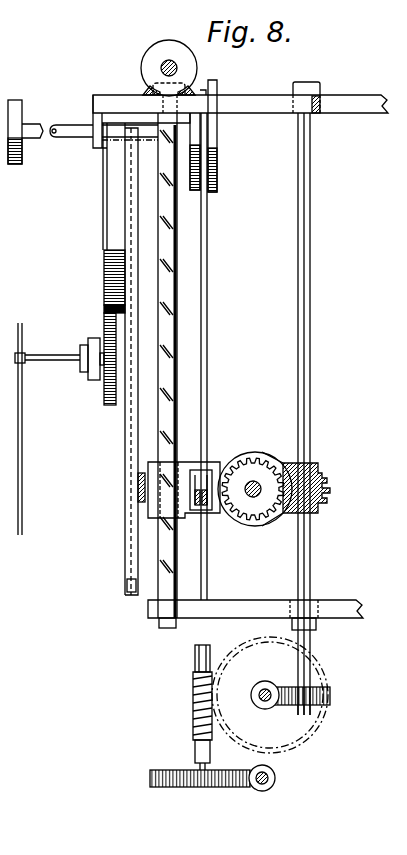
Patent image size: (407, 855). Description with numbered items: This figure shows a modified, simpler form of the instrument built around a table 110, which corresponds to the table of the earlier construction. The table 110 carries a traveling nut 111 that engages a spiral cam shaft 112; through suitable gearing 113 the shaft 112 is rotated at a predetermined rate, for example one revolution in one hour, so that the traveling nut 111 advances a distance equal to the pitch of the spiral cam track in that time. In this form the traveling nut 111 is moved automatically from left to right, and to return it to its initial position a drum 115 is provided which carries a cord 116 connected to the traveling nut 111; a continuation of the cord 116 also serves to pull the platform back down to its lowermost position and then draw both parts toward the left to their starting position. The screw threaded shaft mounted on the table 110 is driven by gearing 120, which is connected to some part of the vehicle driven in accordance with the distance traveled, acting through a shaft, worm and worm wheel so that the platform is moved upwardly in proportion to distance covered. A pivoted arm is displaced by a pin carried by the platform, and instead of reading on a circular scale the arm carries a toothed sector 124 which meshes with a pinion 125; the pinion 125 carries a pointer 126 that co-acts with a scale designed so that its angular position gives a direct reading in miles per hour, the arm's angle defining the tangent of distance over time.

The table 110 is at (222, 512).
The traveling nut 111 is at (148, 505).
The spiral cam shaft 112 is at (178, 364).
The gearing 113 is at (161, 63).
The drum 115 is at (218, 150).
The cord 116 is at (207, 295).
The gearing 120 is at (281, 736).
The toothed sector 124 is at (105, 272).
The pinion 125 is at (105, 322).
The pointer 126 is at (23, 435).